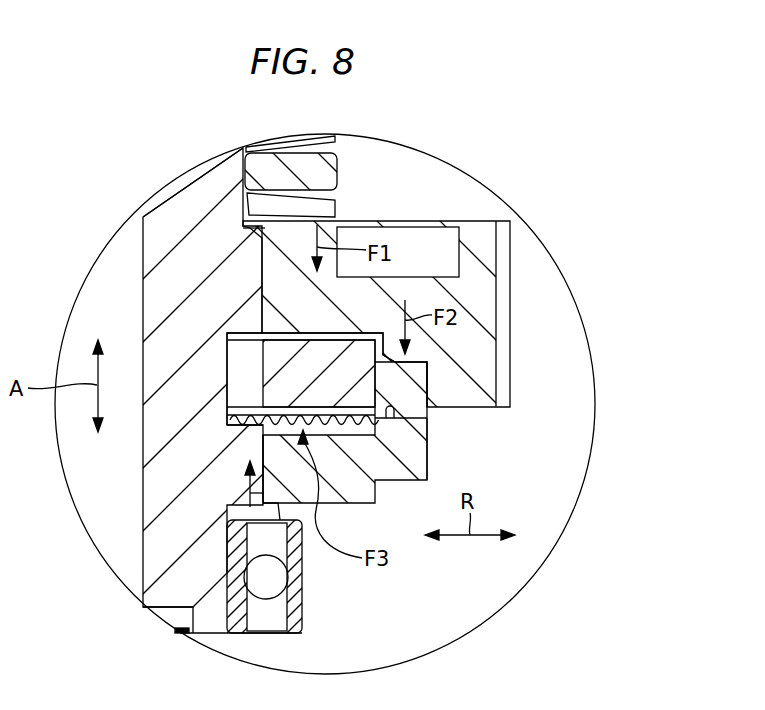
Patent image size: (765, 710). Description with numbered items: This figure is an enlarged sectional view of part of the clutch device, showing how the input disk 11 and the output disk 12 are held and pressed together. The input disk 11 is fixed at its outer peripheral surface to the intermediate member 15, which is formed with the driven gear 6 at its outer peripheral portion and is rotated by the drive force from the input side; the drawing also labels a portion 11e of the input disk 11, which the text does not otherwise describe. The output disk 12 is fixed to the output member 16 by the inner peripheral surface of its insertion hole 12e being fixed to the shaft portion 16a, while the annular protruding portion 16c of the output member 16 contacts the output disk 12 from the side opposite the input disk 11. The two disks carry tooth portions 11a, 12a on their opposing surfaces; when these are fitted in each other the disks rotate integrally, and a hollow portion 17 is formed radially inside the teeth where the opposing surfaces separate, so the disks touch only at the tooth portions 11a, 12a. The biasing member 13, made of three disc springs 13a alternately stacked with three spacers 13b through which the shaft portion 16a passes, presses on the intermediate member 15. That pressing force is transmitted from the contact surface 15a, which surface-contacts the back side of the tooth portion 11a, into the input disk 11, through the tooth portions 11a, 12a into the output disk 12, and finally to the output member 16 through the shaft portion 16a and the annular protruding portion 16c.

The driven gear 6 is at (504, 310).
The input disk 11 is at (413, 387).
The tooth portion 11a is at (427, 433).
The nut flange 11e is at (240, 367).
The output disk 12 is at (420, 457).
The tooth portion 12a is at (382, 428).
The insertion hole 12e is at (257, 448).
The biasing member 13 is at (352, 153).
The disc spring 13a is at (338, 205).
The spacer 13b is at (338, 170).
The intermediate member 15 is at (480, 221).
The contact surface 15a is at (427, 380).
The output member 16 is at (152, 540).
The shaft portion 16a is at (203, 187).
The annular protruding portion 16c is at (283, 520).
The hollow portion 17 is at (330, 437).